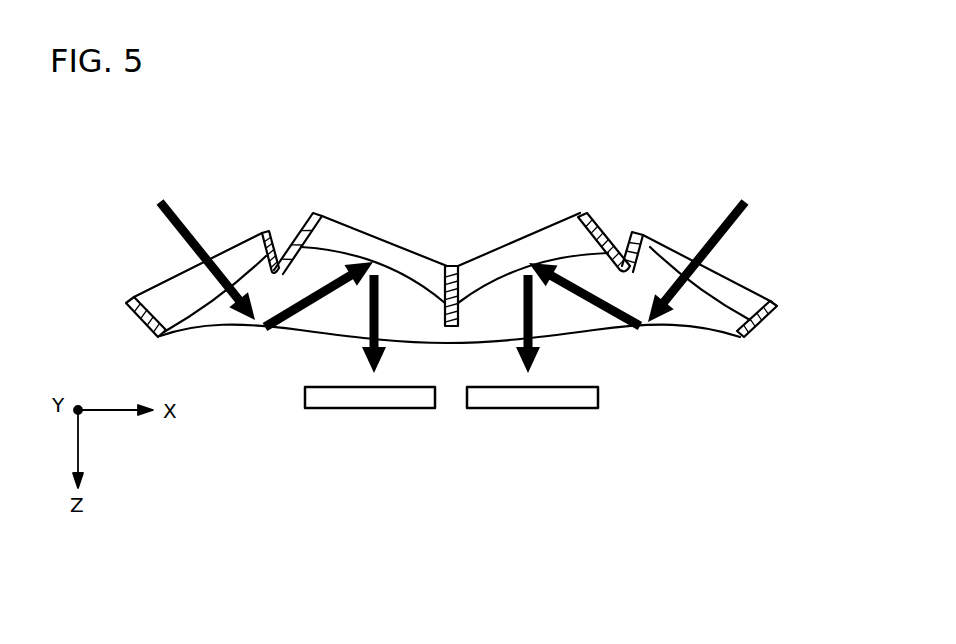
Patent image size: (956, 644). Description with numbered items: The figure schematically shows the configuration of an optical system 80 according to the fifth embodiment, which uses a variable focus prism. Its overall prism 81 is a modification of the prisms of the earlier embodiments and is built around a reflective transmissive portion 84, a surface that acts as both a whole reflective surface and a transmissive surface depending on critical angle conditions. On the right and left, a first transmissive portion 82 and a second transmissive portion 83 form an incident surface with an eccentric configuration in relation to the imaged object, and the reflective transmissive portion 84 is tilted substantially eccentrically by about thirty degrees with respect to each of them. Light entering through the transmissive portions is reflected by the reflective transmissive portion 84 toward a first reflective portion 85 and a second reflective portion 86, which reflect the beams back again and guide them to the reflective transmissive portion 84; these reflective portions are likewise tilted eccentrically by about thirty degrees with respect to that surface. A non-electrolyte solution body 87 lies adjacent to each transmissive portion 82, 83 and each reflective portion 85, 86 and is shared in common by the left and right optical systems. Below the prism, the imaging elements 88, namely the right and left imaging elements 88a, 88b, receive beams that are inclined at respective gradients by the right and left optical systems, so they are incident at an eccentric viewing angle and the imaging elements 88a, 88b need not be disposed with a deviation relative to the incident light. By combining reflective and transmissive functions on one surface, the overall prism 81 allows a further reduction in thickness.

The optical system 80 is at (488, 134).
The overall prism 81 is at (613, 185).
The first transmissive portion 82 is at (262, 226).
The second transmissive portion 83 is at (774, 332).
The reflective transmissive portion 84 is at (616, 348).
The first reflective portion 85 is at (328, 202).
The second reflective portion 86 is at (575, 200).
The non-electrolyte solution body 87 is at (325, 307).
The imaging elements 88 is at (517, 472).
The right imaging element 88a is at (415, 410).
The left imaging element 88b is at (485, 410).